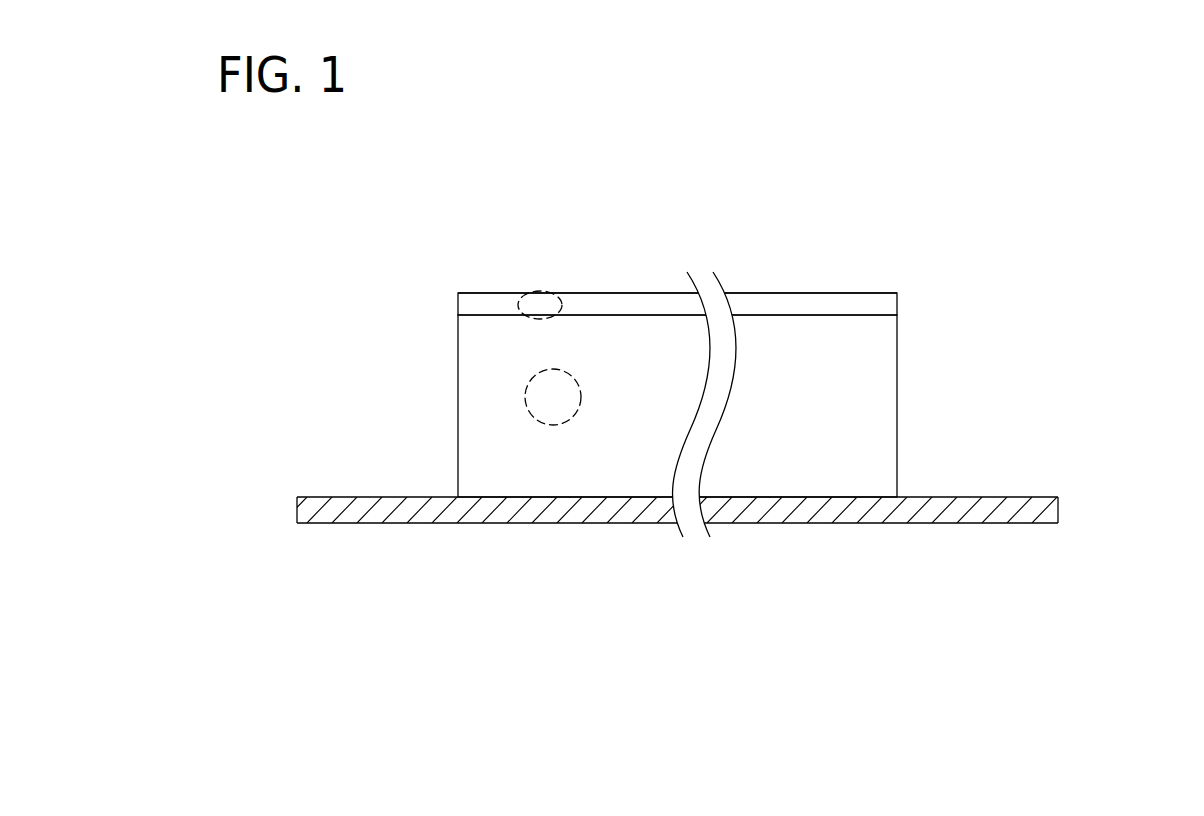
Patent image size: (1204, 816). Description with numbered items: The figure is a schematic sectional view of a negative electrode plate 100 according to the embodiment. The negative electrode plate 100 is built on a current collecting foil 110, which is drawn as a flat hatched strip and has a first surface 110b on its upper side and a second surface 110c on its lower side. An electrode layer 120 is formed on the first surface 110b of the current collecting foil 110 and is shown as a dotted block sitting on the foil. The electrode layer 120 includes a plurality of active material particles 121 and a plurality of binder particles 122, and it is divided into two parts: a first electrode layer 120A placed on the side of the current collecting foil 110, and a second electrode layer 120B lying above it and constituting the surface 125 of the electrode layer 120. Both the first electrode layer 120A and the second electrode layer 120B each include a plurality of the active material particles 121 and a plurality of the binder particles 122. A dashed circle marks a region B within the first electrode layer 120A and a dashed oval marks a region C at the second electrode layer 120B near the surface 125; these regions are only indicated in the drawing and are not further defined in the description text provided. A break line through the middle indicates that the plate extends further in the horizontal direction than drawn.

The negative electrode plate 100 is at (813, 212).
The current collecting foil 110 is at (1015, 500).
The first surface 110b is at (400, 496).
The second surface 110c is at (397, 525).
The electrode layer 120 is at (1000, 295).
The active material particles 121 is at (699, 359).
The binder particles 122 is at (699, 359).
The first electrode layer 120A is at (887, 397).
The second electrode layer 120B is at (878, 307).
The surface of the electrode layer 125 is at (842, 292).
The region B (enlarged portion) B is at (525, 381).
The region C (enlarged portion) C is at (538, 291).